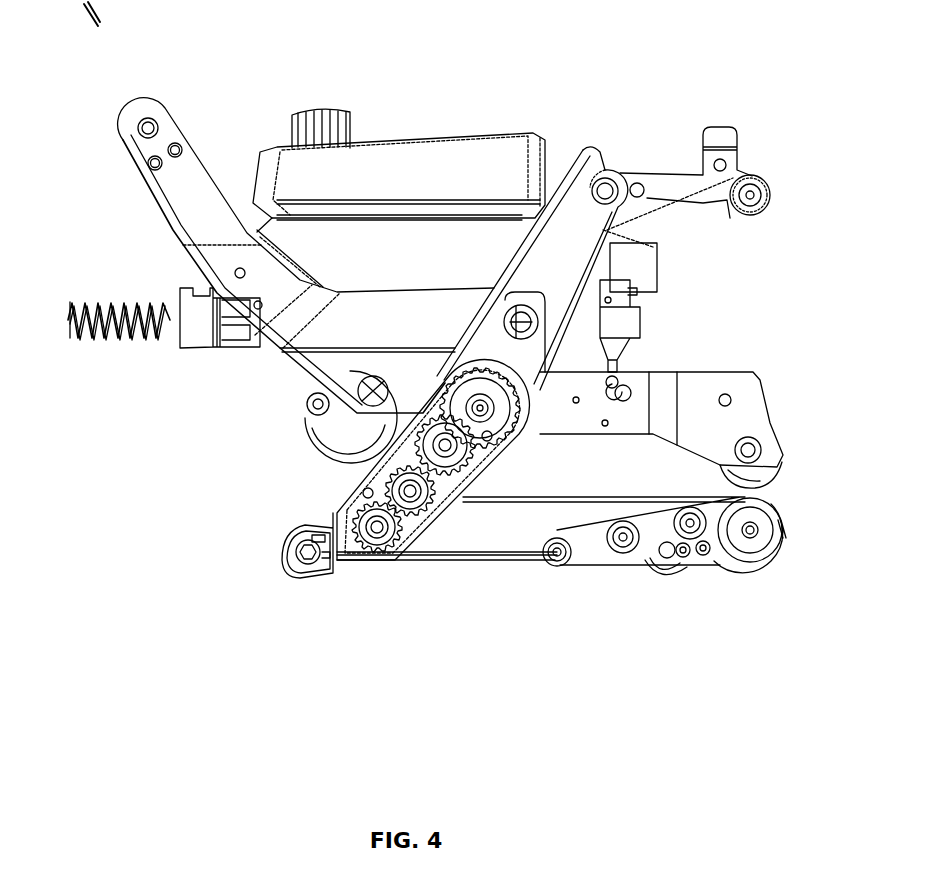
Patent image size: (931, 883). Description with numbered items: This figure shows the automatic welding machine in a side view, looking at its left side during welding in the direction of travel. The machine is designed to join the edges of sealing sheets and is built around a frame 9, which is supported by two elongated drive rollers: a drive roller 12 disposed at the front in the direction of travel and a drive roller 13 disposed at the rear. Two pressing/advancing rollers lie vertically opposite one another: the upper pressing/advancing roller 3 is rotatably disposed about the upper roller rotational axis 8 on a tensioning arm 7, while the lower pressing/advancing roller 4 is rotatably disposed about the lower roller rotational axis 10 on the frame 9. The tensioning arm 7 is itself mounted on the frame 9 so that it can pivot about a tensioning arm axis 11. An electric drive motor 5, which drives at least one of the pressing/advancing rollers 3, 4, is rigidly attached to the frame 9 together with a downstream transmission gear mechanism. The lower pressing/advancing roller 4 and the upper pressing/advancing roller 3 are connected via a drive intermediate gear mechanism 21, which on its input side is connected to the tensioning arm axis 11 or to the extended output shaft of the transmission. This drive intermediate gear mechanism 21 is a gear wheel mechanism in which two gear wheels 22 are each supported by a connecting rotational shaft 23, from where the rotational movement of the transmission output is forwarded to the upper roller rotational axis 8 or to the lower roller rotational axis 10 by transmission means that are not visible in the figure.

The upper pressing/advancing roller 3 is at (785, 470).
The lower pressing/advancing roller 4 is at (797, 530).
The electric drive motor 5 is at (318, 437).
The tensioning arm 7 is at (625, 413).
The upper roller rotational axis 8 is at (750, 445).
The frame 9 is at (337, 370).
The lower roller rotational axis 10 is at (753, 540).
The tensioning arm axis 11 is at (480, 408).
The drive roller 12 is at (277, 657).
The drive roller 13 is at (667, 577).
The drive intermediate gear mechanism 21 is at (454, 510).
The gear wheels 22 is at (446, 442).
The connecting rotational shaft 23 is at (366, 533).